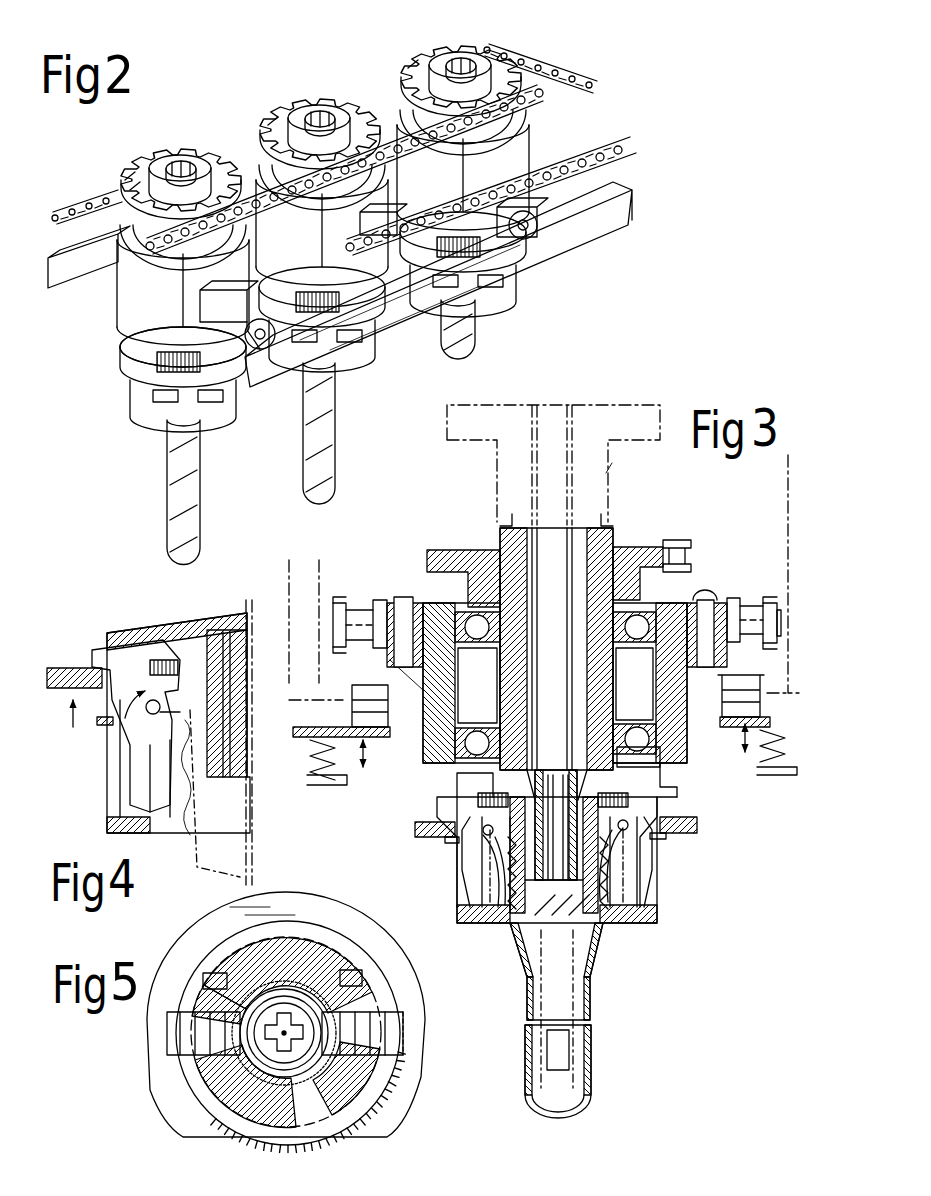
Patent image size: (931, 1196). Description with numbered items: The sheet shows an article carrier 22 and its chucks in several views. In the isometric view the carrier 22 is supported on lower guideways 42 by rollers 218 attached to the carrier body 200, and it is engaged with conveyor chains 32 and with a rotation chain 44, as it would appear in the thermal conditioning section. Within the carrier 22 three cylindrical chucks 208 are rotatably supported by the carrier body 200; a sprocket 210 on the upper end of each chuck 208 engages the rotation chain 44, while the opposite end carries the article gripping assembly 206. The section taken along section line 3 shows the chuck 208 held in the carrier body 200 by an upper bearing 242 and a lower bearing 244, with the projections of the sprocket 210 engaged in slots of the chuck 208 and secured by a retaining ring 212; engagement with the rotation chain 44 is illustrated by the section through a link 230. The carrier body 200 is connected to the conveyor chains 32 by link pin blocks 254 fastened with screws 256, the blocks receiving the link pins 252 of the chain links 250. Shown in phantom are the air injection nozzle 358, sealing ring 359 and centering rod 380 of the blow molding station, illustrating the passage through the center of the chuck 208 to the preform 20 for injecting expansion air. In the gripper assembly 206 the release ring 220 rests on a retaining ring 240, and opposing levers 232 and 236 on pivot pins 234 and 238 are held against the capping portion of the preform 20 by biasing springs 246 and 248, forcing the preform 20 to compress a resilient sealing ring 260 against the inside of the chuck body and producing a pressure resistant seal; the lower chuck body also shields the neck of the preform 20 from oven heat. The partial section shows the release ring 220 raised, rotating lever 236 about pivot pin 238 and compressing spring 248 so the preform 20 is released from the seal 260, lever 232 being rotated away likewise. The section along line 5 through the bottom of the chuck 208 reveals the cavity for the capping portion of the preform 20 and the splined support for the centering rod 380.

In FIG. 2, the section line 3— 3 is at (263, 128).
In FIG. 3, the section line 5— 5 is at (437, 907).
In FIG. 2, the preform 20 is at (172, 561).
In FIG. 3, the preform 20 is at (588, 978).
In FIG. 4, the preform 20 is at (192, 856).
In FIG. 2, the carrier 22 is at (562, 124).
In FIG. 2, the conveyor chains 32 is at (90, 205).
In FIG. 2, the lower guideways 42 is at (68, 256).
In FIG. 3, the lower guideways 42 is at (312, 740).
In FIG. 2, the rotation chain 44 is at (591, 78).
In FIG. 2, the carrier body 200 is at (121, 318).
In FIG. 3, the carrier body 200 is at (430, 734).
In FIG. 2, the article gripping assembly 206 is at (522, 280).
In FIG. 3, the article gripping assembly 206 is at (398, 823).
In FIG. 2, the chuck 208 is at (183, 158).
In FIG. 3, the chuck 208 is at (500, 528).
In FIG. 5, the chuck 208 is at (285, 936).
In FIG. 2, the sprocket 210 is at (134, 176).
In FIG. 3, the sprocket 210 is at (440, 549).
In FIG. 3, the retaining ring 212 is at (615, 548).
In FIG. 2, the rollers 218 is at (258, 345).
In FIG. 3, the rollers 218 is at (745, 675).
In FIG. 2, the release ring 220 is at (114, 356).
In FIG. 3, the release ring 220 is at (418, 835).
In FIG. 4, the release ring 220 is at (86, 667).
In FIG. 5, the release ring 220 is at (414, 1087).
In FIG. 3, the link 230 is at (684, 540).
In FIG. 3, the lever 232 is at (679, 788).
In FIG. 5, the lever 232 is at (402, 1012).
In FIG. 3, the pivot pin 234 is at (646, 846).
In FIG. 5, the pivot pin 234 is at (356, 968).
In FIG. 3, the lever 236 is at (450, 796).
In FIG. 4, the lever 236 is at (102, 650).
In FIG. 5, the lever 236 is at (168, 1052).
In FIG. 3, the pivot pin 238 is at (470, 860).
In FIG. 4, the pivot pin 238 is at (150, 720).
In FIG. 5, the pivot pin 238 is at (207, 972).
In FIG. 3, the retaining ring 240 is at (452, 845).
In FIG. 4, the retaining ring 240 is at (101, 725).
In FIG. 3, the bearing 242 is at (648, 606).
In FIG. 3, the lower bearing 244 is at (663, 762).
In FIG. 3, the biasing spring 246 is at (608, 800).
In FIG. 3, the biasing spring 248 is at (502, 800).
In FIG. 4, the biasing spring 248 is at (178, 663).
In FIG. 3, the links 250 is at (365, 648).
In FIG. 3, the link pins 252 is at (335, 624).
In FIG. 3, the link pin blocks 254 is at (380, 602).
In FIG. 3, the screws 256 is at (402, 590).
In FIG. 3, the resilient sealing ring 260 is at (499, 828).
In FIG. 4, the resilient sealing ring 260 is at (200, 726).
In FIG. 5, the resilient sealing ring 260 is at (270, 1076).
In FIG. 3, the air injection nozzle 358 is at (612, 474).
In FIG. 3, the sealing ring 359 is at (604, 526).
In FIG. 3, the centering rod 380 is at (552, 412).